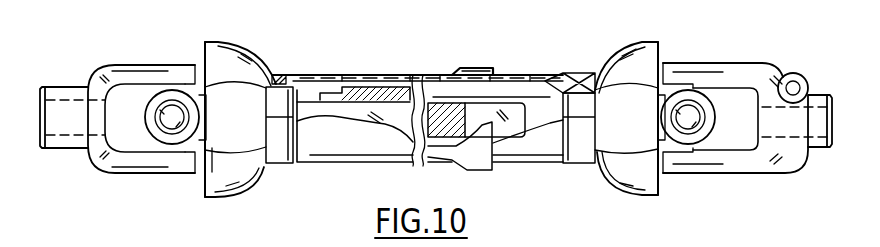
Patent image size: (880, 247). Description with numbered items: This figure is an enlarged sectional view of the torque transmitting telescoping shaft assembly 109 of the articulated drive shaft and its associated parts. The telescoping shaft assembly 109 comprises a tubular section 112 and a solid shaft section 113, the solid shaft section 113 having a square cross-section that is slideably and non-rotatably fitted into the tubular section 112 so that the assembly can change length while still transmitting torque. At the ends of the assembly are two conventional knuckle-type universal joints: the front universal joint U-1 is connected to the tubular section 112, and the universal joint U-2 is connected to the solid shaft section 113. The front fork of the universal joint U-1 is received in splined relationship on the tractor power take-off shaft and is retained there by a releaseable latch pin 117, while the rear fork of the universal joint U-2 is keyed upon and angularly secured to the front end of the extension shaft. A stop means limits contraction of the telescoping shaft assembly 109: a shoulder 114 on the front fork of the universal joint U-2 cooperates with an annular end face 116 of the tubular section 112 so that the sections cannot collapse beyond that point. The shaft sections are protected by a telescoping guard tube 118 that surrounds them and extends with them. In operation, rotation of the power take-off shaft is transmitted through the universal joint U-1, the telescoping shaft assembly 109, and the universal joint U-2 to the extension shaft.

The torque transmitting telescoping shaft assembly 109 is at (449, 57).
The tubular section 112 is at (557, 74).
The solid shaft section 113 is at (386, 108).
The shoulder 114 is at (304, 74).
The annular end face 116 is at (341, 80).
The releaseable latch pin 117 is at (798, 74).
The telescoping guard tube 118 is at (522, 78).
The front universal joint U-1 is at (692, 176).
The universal joint U-2 is at (148, 63).